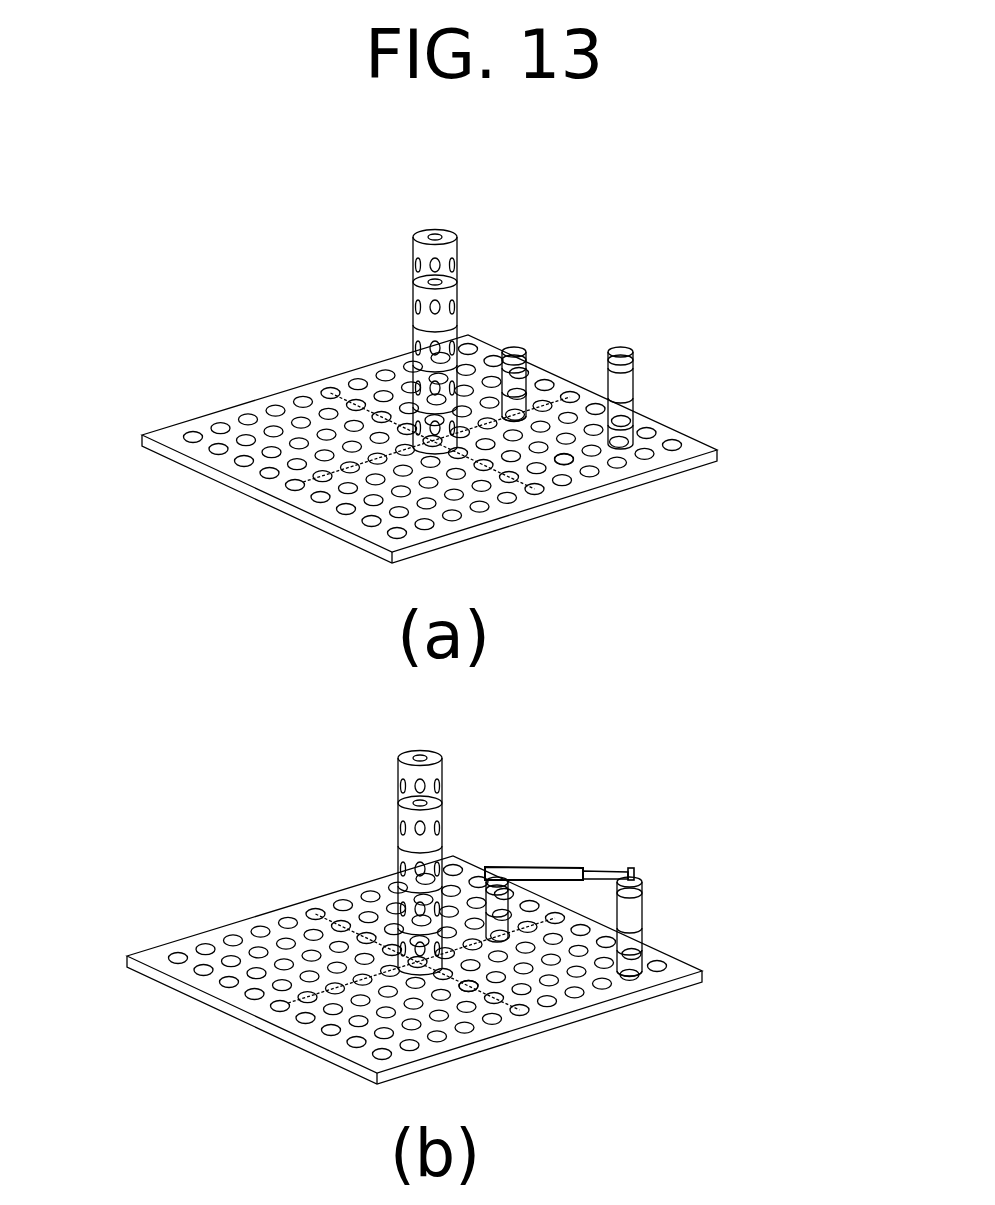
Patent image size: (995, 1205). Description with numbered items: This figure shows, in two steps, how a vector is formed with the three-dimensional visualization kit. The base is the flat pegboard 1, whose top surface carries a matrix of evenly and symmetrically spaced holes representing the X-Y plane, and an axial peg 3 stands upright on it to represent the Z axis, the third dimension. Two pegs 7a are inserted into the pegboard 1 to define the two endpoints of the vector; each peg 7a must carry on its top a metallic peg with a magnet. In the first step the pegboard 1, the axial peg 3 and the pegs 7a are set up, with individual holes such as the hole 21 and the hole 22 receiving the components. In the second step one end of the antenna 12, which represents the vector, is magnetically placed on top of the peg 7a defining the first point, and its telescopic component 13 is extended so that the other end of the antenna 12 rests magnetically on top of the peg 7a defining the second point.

The pegboard 1 is at (296, 397).
The axial peg 3 is at (451, 258).
The peg with metallic peg and magnet 7a is at (518, 375).
The antenna 12 is at (540, 873).
The telescopic component 13 is at (609, 872).
The hole 21 is at (570, 457).
The pin hole 22 is at (522, 420).